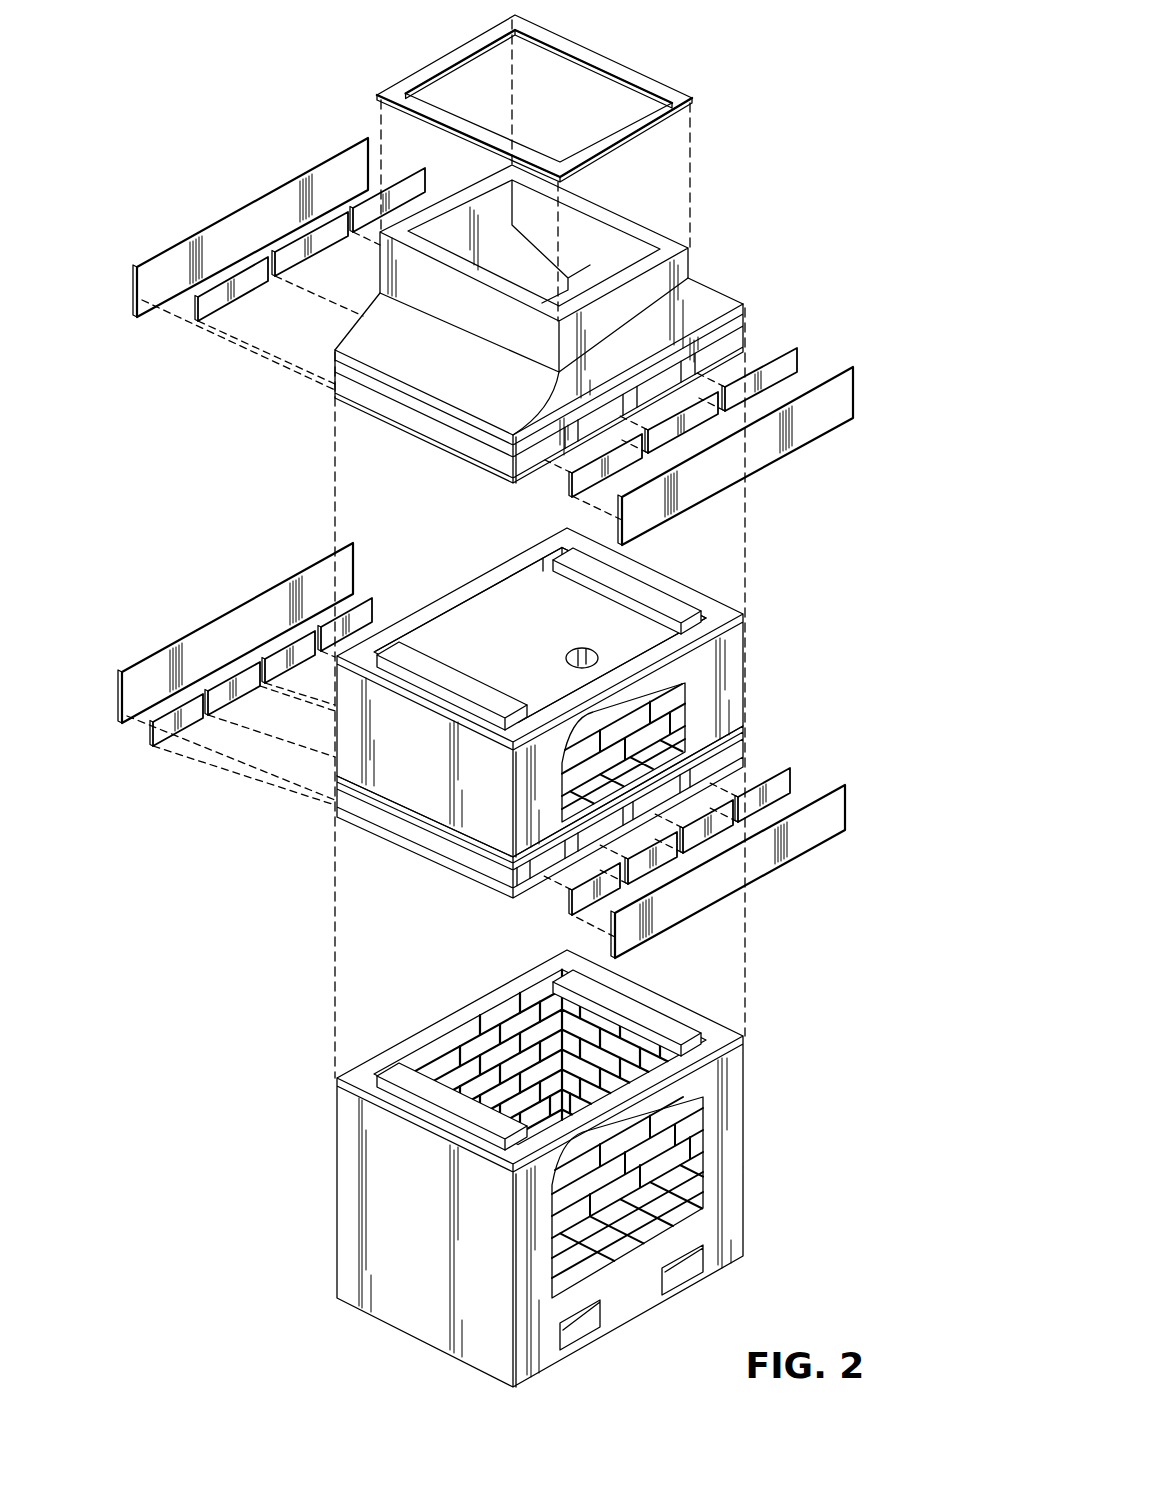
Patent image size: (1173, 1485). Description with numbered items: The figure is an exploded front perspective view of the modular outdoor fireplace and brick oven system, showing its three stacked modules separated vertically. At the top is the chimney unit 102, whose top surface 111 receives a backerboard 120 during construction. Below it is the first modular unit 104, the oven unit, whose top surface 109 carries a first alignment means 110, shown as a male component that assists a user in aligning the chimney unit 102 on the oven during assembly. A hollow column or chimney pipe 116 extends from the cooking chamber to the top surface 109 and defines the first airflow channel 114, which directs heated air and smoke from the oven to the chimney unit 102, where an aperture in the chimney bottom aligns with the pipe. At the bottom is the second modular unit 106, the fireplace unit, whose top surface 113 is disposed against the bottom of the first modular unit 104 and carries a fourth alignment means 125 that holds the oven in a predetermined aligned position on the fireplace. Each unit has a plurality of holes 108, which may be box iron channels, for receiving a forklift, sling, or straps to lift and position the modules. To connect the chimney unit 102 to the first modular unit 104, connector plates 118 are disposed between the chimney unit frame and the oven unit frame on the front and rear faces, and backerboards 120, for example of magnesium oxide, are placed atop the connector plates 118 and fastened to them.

The chimney unit 102 is at (745, 304).
The first modular unit 104 is at (383, 845).
The second modular unit 106 is at (335, 1200).
The plurality of holes 108 is at (577, 1330).
The top surface of the first modular unit 109 is at (722, 619).
The first alignment means 110 is at (683, 607).
The top surface of the chimney unit 111 is at (667, 250).
The top surface of the second modular unit 113 is at (718, 1039).
The first airflow channel 114 is at (580, 649).
The chimney pipe 116 is at (478, 618).
The connector plate 118 is at (227, 705).
The backerboard 120 is at (778, 862).
The fourth alignment means 125 is at (380, 1063).